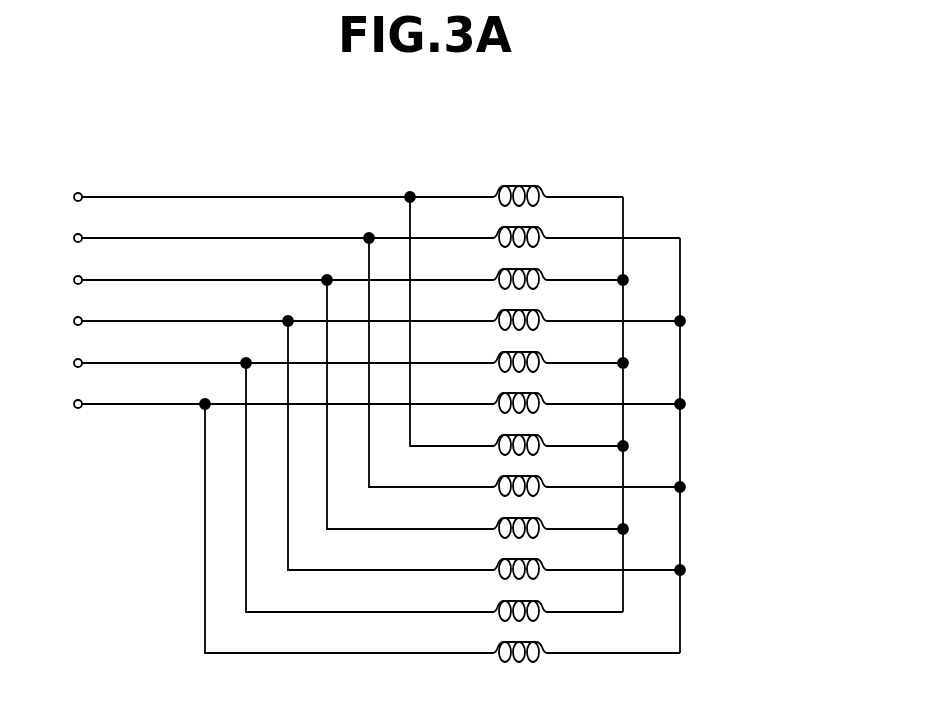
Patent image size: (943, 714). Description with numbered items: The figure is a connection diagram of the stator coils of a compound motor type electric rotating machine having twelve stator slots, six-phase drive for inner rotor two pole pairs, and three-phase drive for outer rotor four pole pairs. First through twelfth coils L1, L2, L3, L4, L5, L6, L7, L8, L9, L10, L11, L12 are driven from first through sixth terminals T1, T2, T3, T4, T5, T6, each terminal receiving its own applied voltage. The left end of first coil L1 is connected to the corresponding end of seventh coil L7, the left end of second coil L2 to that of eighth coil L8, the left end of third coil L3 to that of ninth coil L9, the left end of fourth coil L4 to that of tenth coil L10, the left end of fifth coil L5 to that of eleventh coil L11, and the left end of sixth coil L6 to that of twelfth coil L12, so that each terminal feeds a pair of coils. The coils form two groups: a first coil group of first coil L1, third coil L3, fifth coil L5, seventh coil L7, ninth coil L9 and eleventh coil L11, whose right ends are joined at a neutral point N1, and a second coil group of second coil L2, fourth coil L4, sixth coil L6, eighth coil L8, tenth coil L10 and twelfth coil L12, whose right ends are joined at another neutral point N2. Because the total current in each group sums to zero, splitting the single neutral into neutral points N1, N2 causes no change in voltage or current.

The first terminal T1 is at (266, 315).
The second terminal T2 is at (266, 356).
The third terminal T3 is at (266, 398).
The fourth terminal T4 is at (266, 439).
The fifth terminal T5 is at (266, 481).
The sixth terminal T6 is at (266, 522).
The first coil L1 is at (556, 189).
The second coil L2 is at (585, 230).
The third coil L3 is at (556, 272).
The fourth coil L4 is at (585, 313).
The fifth coil L5 is at (556, 355).
The sixth coil L6 is at (585, 396).
The seventh coil L7 is at (556, 438).
The eighth coil L8 is at (585, 479).
The ninth coil L9 is at (556, 521).
The tenth coil L10 is at (585, 562).
The eleventh coil L11 is at (556, 604).
The twelfth coil L12 is at (585, 645).
The neutral point N1 is at (640, 190).
The another neutral point N2 is at (700, 392).